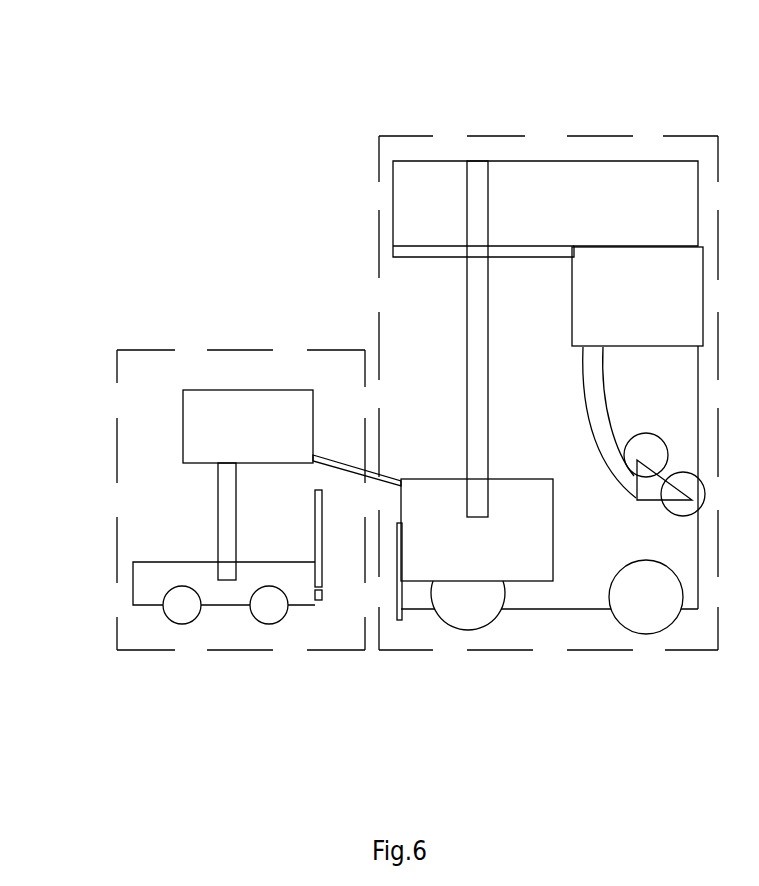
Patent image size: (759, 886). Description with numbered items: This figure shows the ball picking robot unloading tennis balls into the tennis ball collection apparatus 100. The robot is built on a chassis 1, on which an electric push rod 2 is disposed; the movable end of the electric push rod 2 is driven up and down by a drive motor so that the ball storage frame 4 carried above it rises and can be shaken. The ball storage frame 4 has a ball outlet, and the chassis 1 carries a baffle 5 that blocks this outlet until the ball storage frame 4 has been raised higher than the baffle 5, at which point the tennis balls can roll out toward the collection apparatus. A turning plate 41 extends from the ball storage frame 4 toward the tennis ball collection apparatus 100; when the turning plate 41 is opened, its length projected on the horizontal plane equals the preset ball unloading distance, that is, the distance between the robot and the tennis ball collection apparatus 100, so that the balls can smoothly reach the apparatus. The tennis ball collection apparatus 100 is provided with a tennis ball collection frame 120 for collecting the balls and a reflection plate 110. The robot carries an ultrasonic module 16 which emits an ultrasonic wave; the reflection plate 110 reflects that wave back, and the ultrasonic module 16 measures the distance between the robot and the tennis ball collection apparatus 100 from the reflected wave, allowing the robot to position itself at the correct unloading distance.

The chassis 1 is at (150, 595).
The electric push rod 2 is at (222, 528).
The ball storage frame 4 is at (205, 422).
The turning plate 41 is at (352, 465).
The baffle 5 is at (320, 553).
The ultrasonic module 16 is at (321, 597).
The tennis ball collection apparatus 100 is at (525, 147).
The reflection plate 110 is at (403, 620).
The tennis ball collection frame 120 is at (527, 568).